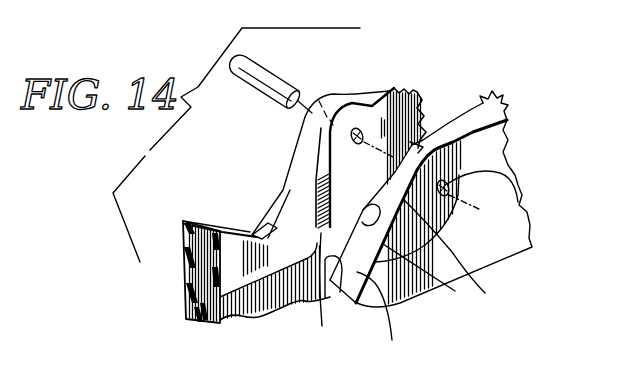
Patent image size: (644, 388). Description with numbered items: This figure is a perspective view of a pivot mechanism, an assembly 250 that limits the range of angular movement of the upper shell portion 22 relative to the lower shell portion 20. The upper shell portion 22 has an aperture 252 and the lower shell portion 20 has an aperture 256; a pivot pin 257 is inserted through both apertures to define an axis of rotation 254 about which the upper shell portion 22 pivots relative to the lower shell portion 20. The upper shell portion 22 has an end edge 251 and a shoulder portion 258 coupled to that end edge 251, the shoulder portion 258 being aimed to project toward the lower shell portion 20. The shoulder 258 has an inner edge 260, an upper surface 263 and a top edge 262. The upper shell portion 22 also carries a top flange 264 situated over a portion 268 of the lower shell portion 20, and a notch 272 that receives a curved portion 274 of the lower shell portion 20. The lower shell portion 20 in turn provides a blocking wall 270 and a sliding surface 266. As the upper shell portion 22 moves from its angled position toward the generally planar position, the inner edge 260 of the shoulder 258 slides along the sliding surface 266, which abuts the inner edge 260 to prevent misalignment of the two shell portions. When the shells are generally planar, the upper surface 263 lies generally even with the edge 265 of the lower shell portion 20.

The lower shell portion 20 is at (208, 320).
The upper shell portion 22 is at (505, 229).
The assembly 250 is at (443, 100).
The end edge 251 is at (449, 252).
The aperture 252 is at (523, 182).
The axis of rotation 254 is at (519, 196).
The aperture 256 is at (358, 129).
The pivot pin 257 is at (269, 84).
The shoulder portion 258 is at (364, 232).
The inner edge 260 is at (337, 289).
The top edge 262 is at (413, 289).
The upper surface 263 is at (389, 316).
The top flange 264 is at (468, 115).
The edge 265 is at (267, 215).
The sliding surface 266 is at (298, 229).
The portion 268 is at (409, 80).
The blocking wall 270 is at (317, 163).
The notch 272 is at (385, 185).
The curved portion 274 is at (328, 95).